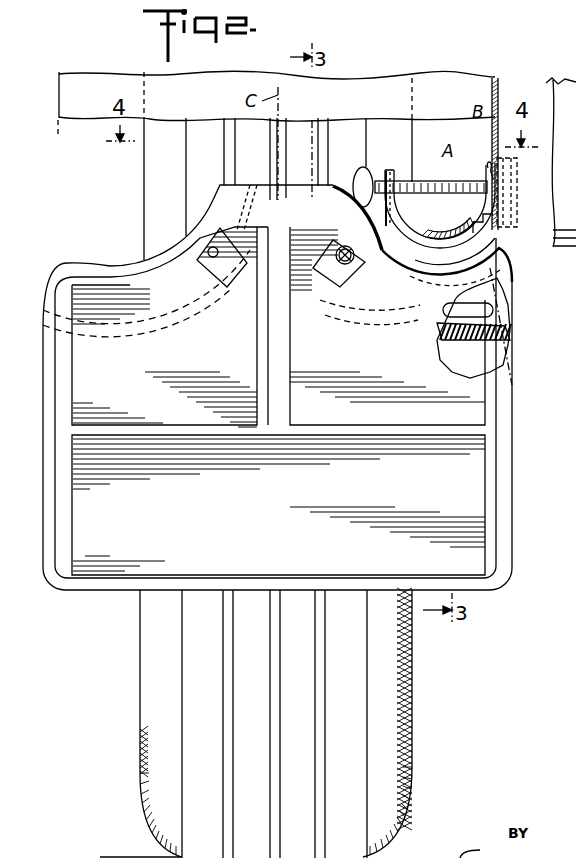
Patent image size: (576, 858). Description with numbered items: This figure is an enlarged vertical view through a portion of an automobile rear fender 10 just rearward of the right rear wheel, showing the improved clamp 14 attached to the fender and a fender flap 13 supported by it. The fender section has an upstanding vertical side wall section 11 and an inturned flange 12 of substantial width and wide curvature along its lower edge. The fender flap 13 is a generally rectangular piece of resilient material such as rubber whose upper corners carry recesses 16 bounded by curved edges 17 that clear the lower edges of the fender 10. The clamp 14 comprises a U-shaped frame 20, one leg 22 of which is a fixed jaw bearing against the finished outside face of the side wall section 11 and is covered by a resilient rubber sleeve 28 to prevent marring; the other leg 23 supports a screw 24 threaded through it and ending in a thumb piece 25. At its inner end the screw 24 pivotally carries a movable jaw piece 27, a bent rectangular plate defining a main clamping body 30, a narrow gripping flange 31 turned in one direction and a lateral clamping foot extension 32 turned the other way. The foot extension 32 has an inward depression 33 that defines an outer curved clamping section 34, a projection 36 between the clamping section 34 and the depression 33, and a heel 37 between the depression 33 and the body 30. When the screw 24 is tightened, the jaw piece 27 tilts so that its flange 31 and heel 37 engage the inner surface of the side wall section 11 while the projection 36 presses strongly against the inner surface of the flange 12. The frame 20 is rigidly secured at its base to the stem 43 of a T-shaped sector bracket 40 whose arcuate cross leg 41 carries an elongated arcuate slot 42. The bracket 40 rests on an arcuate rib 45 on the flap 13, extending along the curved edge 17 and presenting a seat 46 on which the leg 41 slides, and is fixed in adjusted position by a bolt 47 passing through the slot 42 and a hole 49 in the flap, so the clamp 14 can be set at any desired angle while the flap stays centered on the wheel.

The rear fender 10 is at (370, 88).
The side wall section 11 is at (497, 88).
The inturned flange 12 is at (490, 263).
The fender flap 13 is at (521, 492).
The clamp 14 is at (398, 162).
The recesses 16 is at (107, 262).
The curved edges 17 is at (158, 263).
The U-shaped frame 20 is at (508, 235).
The fixed jaw leg 22 is at (512, 175).
The screw-supporting leg 23 is at (398, 173).
The screw 24 is at (427, 181).
The thumb piece 25 is at (365, 166).
The jaw piece 27 is at (485, 172).
The sleeve 28 is at (515, 208).
The main clamping body 30 is at (478, 202).
The gripping flange 31 is at (490, 167).
The clamping foot extension 32 is at (430, 251).
The depression 33 is at (497, 245).
The curved clamping section 34 is at (445, 232).
The projection 36 is at (459, 260).
The heel 37 is at (508, 220).
The bracket 40 is at (508, 303).
The cross leg 41 is at (490, 353).
The arcuate slot 42 is at (450, 317).
The stem 43 is at (367, 307).
The arcuate rib 45 is at (125, 337).
The seat 46 is at (453, 330).
The bolt 47 is at (327, 280).
The hole 49 is at (213, 260).